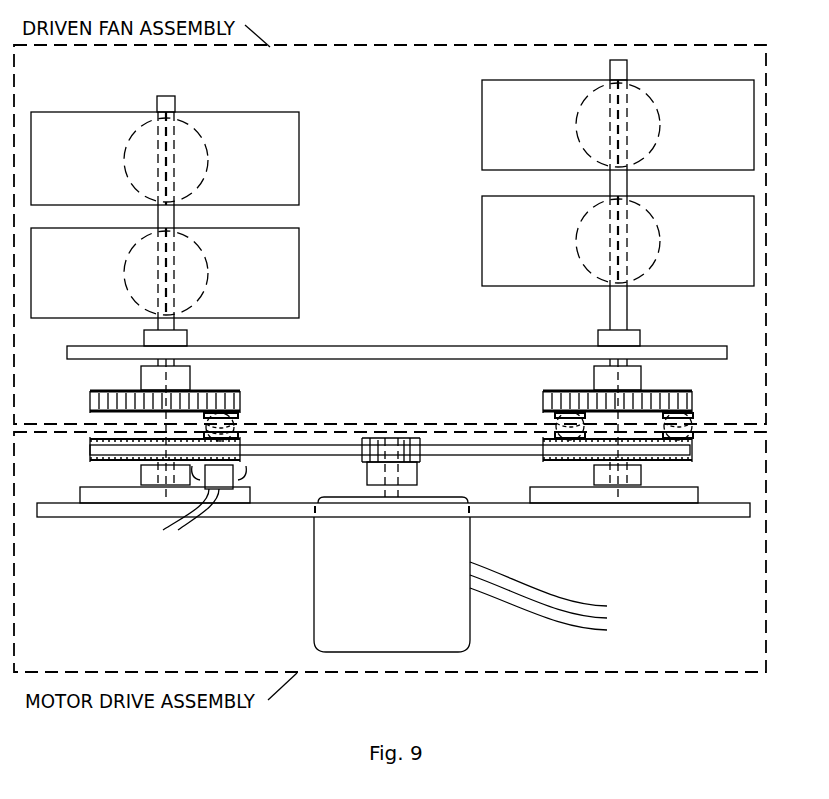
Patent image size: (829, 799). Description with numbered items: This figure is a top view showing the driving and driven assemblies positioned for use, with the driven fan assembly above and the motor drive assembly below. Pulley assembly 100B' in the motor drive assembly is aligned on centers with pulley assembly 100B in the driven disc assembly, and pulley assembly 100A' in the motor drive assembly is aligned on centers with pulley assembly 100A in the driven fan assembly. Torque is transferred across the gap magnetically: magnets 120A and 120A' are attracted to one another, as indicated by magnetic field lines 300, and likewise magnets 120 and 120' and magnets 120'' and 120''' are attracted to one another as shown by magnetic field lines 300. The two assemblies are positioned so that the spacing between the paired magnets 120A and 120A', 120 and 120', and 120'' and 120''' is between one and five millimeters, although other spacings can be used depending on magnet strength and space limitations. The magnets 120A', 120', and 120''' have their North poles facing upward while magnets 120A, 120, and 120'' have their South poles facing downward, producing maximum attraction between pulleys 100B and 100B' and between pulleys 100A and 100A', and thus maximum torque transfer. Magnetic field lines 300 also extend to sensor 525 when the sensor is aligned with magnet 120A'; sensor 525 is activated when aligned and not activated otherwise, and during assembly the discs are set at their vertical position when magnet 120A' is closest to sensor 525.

The pulley assembly 100B is at (136, 402).
The pulley assembly 100B' is at (133, 455).
The pulley assembly 100A is at (586, 390).
The pulley assembly 100A' is at (588, 460).
The magnet 120A is at (251, 398).
The magnet 120A' is at (273, 419).
The magnet 120 is at (526, 403).
The magnet 120' is at (496, 419).
The magnet 120'' is at (699, 393).
The magnet 120''' is at (709, 423).
The magnetic field lines 300 is at (234, 428).
The sensor 525 is at (233, 478).